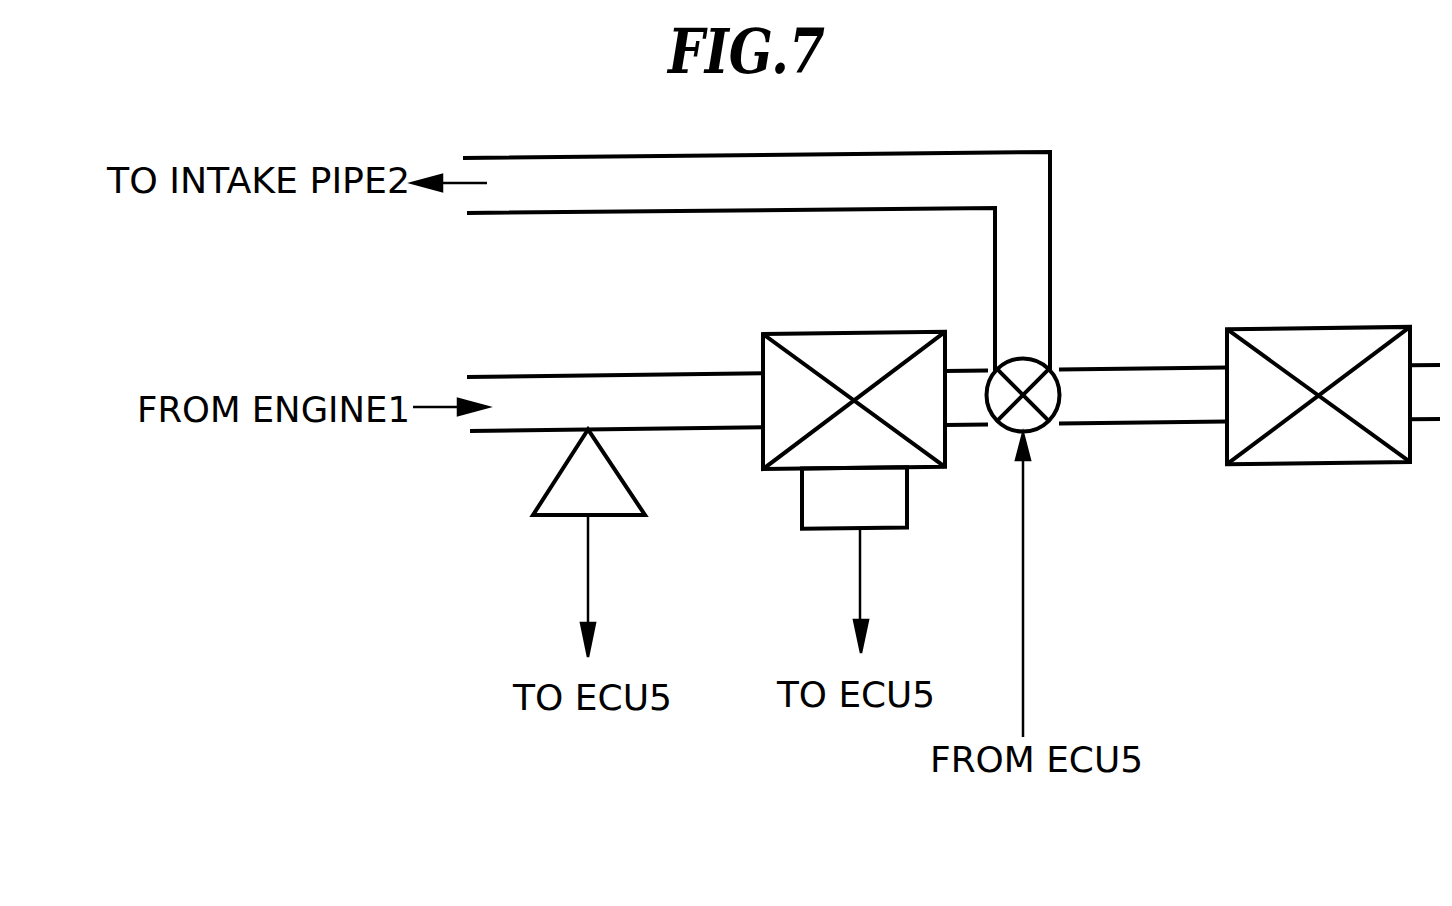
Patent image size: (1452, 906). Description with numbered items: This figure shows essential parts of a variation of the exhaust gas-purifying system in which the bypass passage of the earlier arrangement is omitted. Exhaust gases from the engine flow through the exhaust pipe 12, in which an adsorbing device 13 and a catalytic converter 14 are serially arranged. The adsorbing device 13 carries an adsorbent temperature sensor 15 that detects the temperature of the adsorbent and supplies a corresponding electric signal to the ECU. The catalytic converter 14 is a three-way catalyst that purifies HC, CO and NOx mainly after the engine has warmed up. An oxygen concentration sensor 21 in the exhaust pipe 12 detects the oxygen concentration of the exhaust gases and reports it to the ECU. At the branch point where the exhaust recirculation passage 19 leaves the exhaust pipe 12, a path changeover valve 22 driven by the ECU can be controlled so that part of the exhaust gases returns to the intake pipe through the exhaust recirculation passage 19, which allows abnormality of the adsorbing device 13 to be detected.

The exhaust pipe 12 is at (588, 376).
The adsorbing device 13 is at (856, 333).
The catalytic converter 14 is at (1338, 327).
The adsorbent temperature sensor 15 is at (807, 530).
The exhaust recirculation passage 19 is at (1070, 245).
The oxygen concentration sensor 21 is at (560, 517).
The path changeover valve 22 is at (1042, 426).